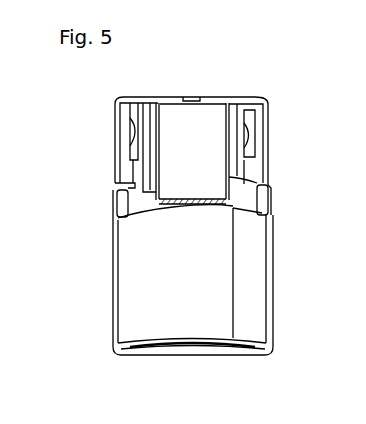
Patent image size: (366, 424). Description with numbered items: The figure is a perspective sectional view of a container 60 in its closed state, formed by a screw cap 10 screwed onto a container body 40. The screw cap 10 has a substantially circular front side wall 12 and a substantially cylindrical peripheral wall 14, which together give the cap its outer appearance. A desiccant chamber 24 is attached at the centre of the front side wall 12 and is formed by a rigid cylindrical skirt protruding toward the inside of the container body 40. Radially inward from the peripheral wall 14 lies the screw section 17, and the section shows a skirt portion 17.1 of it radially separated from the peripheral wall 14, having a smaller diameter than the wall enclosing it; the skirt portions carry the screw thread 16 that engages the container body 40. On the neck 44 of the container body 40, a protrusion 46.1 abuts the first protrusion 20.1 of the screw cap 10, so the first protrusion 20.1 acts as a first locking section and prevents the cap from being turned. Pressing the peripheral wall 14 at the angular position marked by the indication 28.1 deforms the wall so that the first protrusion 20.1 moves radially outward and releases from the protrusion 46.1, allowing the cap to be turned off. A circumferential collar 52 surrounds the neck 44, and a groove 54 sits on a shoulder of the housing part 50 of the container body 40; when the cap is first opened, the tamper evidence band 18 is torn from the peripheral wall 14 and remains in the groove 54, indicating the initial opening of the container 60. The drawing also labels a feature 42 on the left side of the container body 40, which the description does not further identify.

The screw cap 10 is at (97, 133).
The front side wall 12 is at (210, 96).
The peripheral wall 14 is at (267, 150).
The screw thread 16 is at (248, 136).
The screw section 17 is at (133, 128).
The skirt portion 17.1 is at (268, 110).
The tamper evidence band 18 is at (260, 210).
The first protrusion 20.1 is at (266, 158).
The desiccant chamber 24 is at (192, 130).
The indication 28.1 is at (193, 100).
The container body 40 is at (283, 284).
The snap foot 42 is at (133, 160).
The neck 44 is at (246, 130).
The protrusion 46.1 is at (248, 180).
The housing part 50 is at (127, 250).
The circumferential collar 52 is at (248, 197).
The groove 54 is at (262, 217).
The container 60 is at (220, 364).